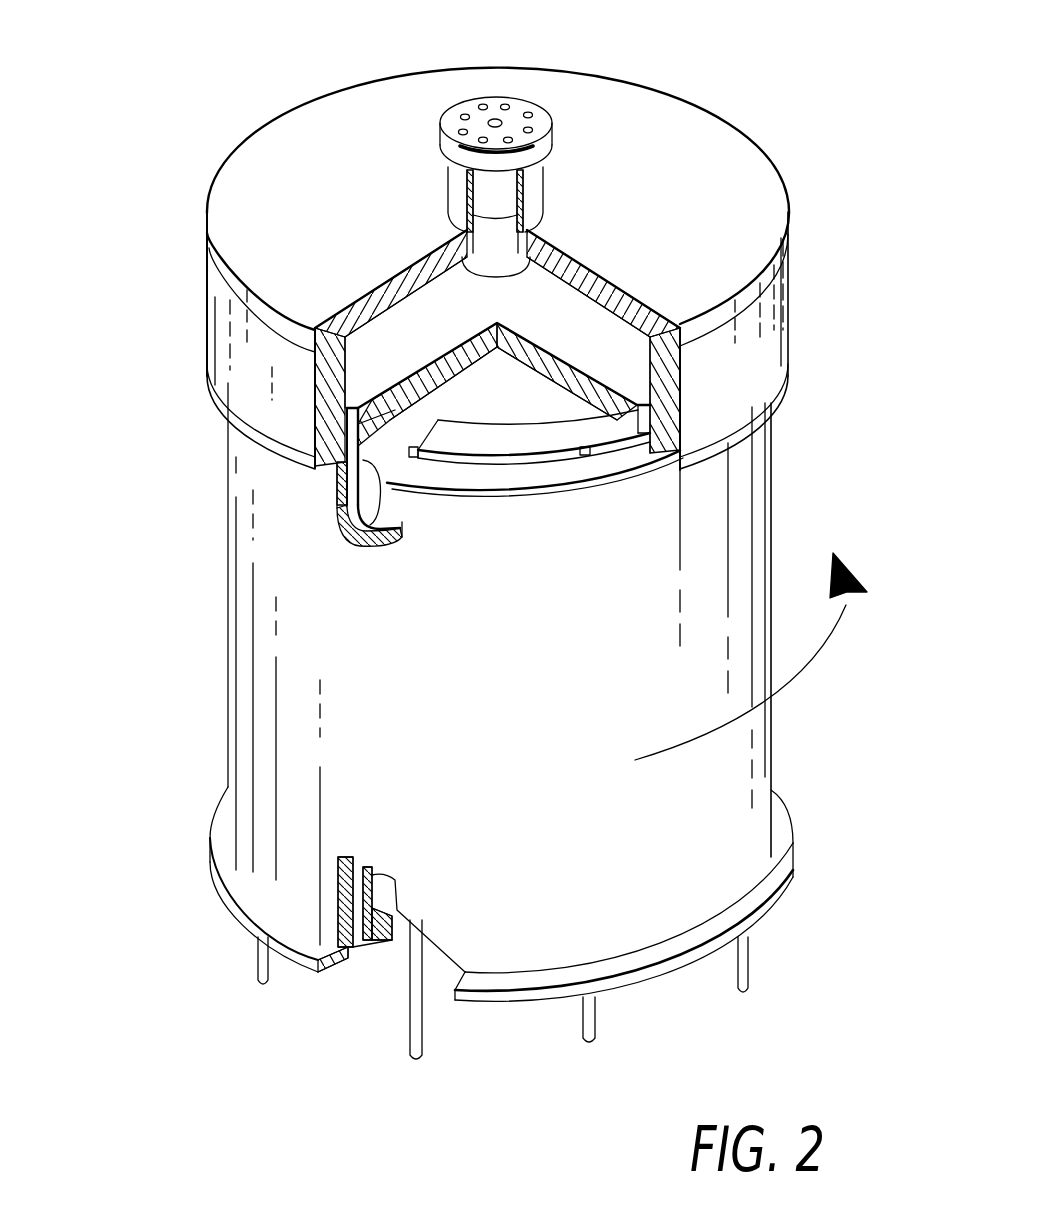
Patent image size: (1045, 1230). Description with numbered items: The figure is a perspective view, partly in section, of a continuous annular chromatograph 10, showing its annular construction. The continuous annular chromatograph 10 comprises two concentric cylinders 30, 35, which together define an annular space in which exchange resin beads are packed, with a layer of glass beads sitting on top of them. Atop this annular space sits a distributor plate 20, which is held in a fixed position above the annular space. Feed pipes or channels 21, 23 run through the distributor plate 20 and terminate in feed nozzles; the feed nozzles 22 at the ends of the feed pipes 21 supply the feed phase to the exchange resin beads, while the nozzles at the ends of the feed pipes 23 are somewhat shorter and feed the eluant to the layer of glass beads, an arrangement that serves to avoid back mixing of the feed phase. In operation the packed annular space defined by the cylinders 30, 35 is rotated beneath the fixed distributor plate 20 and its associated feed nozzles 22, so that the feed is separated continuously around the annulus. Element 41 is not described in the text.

The continuous annular chromatograph 10 is at (465, 536).
The distributor plate 20 is at (498, 145).
The feed pipe 21 is at (506, 100).
The feed nozzle 22 is at (531, 112).
The feed pipe 23 is at (490, 120).
The concentric cylinder 30 is at (771, 470).
The concentric cylinder 35 is at (377, 545).
The support legs 41 is at (752, 967).